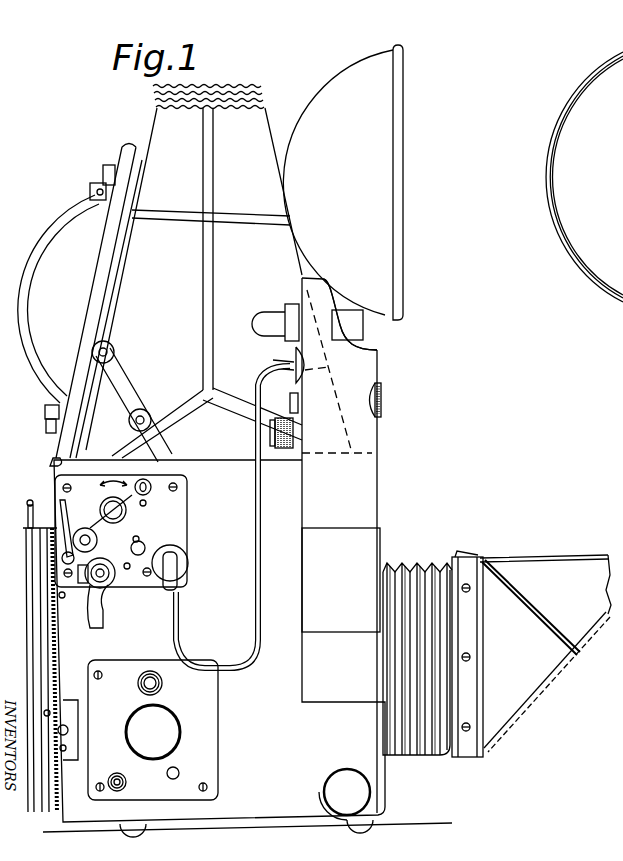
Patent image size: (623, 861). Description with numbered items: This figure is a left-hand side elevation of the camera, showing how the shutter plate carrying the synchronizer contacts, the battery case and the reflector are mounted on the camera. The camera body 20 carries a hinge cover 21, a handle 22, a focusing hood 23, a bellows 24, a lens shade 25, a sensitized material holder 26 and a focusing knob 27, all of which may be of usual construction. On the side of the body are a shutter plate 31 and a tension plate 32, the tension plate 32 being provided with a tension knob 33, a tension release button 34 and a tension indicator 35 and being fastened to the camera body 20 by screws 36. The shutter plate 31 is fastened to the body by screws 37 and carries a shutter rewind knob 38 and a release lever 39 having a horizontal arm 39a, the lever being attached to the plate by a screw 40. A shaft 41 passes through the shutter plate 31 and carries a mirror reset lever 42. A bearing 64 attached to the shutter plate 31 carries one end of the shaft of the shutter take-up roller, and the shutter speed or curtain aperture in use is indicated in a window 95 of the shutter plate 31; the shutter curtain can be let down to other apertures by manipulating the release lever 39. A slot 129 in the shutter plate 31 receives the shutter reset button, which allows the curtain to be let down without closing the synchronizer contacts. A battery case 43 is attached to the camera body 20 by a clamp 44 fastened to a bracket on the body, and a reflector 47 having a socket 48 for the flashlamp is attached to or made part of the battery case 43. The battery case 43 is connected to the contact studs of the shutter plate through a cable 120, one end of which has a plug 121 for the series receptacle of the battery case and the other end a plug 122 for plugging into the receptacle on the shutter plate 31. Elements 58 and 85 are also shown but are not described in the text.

The camera body 20 is at (292, 692).
The hinge cover 21 is at (92, 300).
The handle 22 is at (52, 234).
The focusing hood 23 is at (158, 123).
The bellows 24 is at (432, 566).
The lens shade 25 is at (533, 565).
The sensitized material holder 26 is at (25, 556).
The focusing knob 27 is at (345, 775).
The shutter plate 31 is at (186, 518).
The tension plate 32 is at (207, 718).
The tension knob 33 is at (171, 738).
The tension release button 34 is at (180, 772).
The tension indicator 35 is at (161, 686).
The screws 36 is at (98, 680).
The screws 37 is at (63, 488).
The shutter rewind knob 38 is at (126, 506).
The release lever 39 is at (67, 526).
The horizontal arm 39a is at (116, 526).
The screw 40 is at (63, 560).
The shaft 41 is at (108, 584).
The mirror reset lever 42 is at (100, 625).
The battery case 43 is at (380, 432).
The clamp 44 is at (376, 546).
The reflector 47 is at (388, 240).
The socket 48 is at (342, 294).
The knob 58 is at (117, 773).
The bearing 64 is at (97, 540).
The screw 85 is at (64, 598).
The window 95 is at (140, 479).
The cable 120 is at (257, 548).
The plug 121 is at (290, 363).
The plug 122 is at (178, 572).
The slot 129 is at (142, 544).